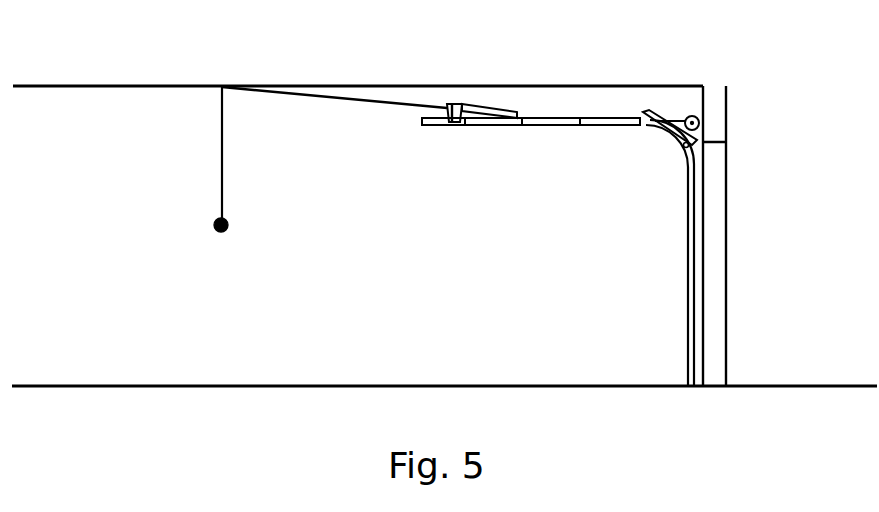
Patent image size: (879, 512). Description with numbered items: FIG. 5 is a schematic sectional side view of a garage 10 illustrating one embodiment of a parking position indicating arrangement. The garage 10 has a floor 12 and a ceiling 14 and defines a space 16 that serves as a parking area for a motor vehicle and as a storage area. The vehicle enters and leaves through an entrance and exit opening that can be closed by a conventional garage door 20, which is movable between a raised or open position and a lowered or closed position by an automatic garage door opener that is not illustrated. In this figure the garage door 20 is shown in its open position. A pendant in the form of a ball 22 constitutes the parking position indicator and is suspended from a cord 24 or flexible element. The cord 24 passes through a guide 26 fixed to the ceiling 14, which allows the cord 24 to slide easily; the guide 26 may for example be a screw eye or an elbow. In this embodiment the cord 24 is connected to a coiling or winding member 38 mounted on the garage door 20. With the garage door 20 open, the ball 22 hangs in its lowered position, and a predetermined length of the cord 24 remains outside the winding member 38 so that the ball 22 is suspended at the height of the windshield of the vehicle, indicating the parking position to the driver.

The garage 10 is at (763, 72).
The floor 12 is at (58, 385).
The ceiling 14 is at (81, 88).
The space 16 is at (418, 297).
The garage door 20 is at (560, 128).
The ball 22 is at (224, 232).
The cord 24 is at (283, 100).
The guide 26 is at (220, 88).
The coiling or winding member 38 is at (447, 125).